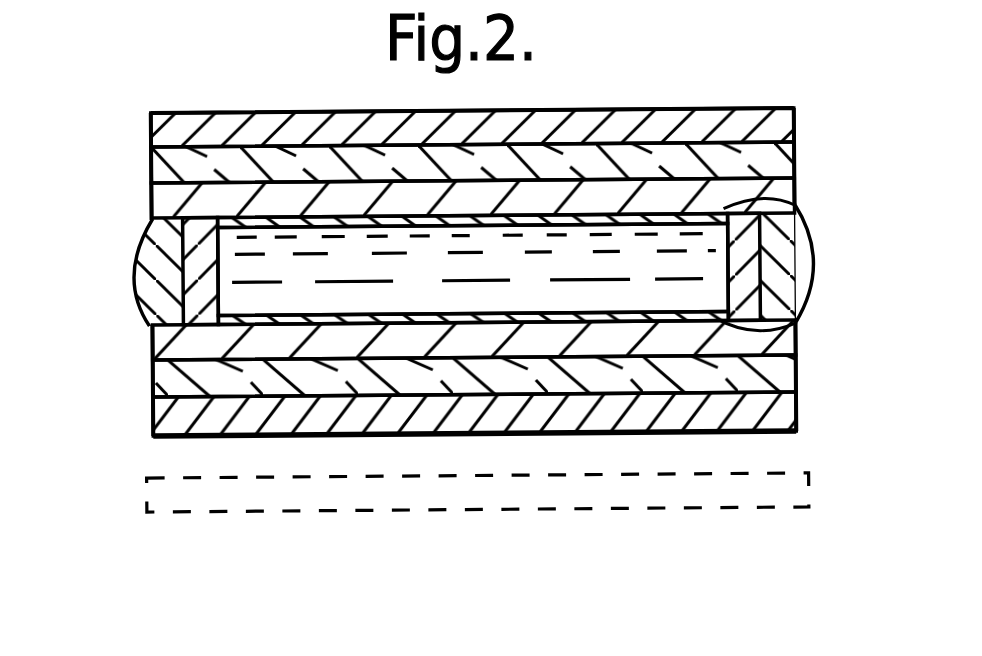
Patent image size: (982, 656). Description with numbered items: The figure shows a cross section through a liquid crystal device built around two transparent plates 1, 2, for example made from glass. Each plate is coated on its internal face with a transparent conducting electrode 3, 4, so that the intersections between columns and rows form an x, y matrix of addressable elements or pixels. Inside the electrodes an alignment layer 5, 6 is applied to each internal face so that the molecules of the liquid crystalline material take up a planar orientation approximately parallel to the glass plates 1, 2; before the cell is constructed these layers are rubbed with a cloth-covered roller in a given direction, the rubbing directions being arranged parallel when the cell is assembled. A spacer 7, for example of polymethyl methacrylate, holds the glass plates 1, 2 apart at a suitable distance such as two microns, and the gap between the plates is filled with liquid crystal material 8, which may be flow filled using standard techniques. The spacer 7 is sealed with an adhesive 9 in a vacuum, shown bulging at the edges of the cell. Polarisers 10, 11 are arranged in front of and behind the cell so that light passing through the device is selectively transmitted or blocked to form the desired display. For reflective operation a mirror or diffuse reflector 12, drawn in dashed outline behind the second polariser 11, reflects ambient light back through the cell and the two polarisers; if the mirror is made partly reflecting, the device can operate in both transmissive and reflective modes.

The transparent plate 1 is at (280, 163).
The transparent plate 2 is at (167, 380).
The transparent conducting electrode 3 is at (687, 200).
The transparent conducting electrode 4 is at (160, 345).
The alignment layer 5 is at (770, 206).
The alignment layer 6 is at (793, 334).
The spacer 7 is at (745, 268).
The liquid crystal material 8 is at (228, 244).
The adhesive 9 is at (150, 278).
The polariser 10 is at (178, 127).
The polariser 11 is at (775, 412).
The mirror 12 is at (503, 493).